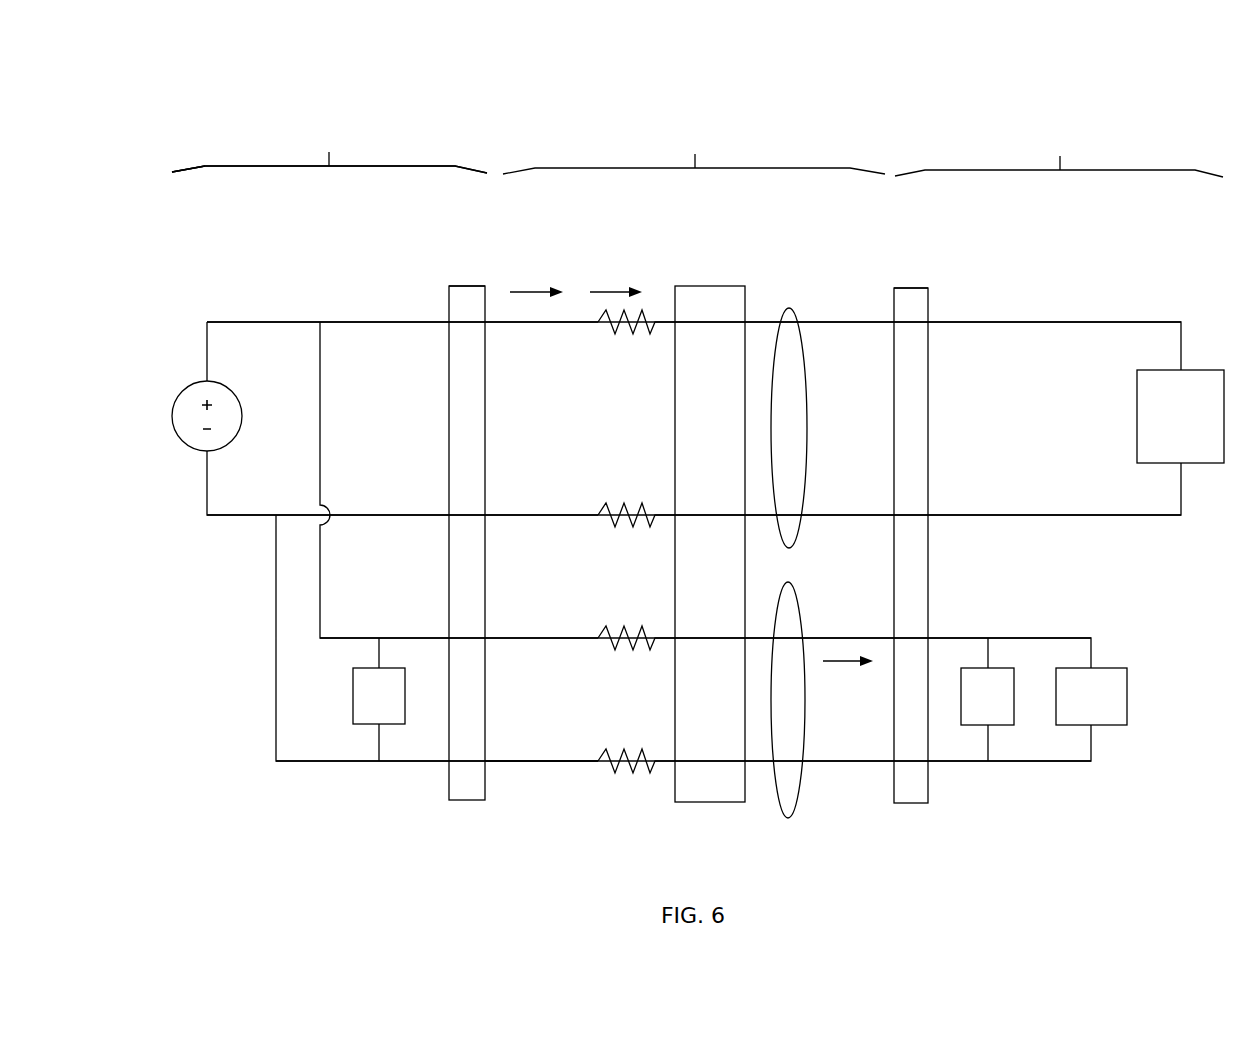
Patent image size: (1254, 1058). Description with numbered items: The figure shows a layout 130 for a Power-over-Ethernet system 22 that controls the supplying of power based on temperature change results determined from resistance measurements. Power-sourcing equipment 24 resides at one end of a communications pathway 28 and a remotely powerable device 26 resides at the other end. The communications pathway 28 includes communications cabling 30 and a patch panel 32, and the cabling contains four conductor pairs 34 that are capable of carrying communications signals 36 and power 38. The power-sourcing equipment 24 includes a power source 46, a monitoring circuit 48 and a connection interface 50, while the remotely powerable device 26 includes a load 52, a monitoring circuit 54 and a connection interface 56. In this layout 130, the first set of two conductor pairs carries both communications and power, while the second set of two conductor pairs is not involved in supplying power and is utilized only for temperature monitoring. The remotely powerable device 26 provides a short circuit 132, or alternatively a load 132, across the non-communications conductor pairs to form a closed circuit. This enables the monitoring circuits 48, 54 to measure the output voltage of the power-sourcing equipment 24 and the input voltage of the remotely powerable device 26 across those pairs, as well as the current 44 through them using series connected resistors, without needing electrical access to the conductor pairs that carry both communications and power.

The layout 130 is at (181, 88).
The Power-over-Ethernet system 22 is at (258, 130).
The power-sourcing equipment 24 is at (329, 148).
The communications pathway 28 is at (694, 150).
The remotely powerable device 26 is at (1059, 151).
The communications cabling 30 is at (514, 806).
The patch panel 32 is at (700, 803).
The conductor pairs 34 is at (558, 782).
The communications signal 36 is at (530, 290).
The power 38 is at (607, 290).
The current 44 is at (840, 663).
The power source 46 is at (190, 450).
The monitoring circuit 48 is at (379, 699).
The connection interface 50 is at (460, 801).
The load 52 is at (1180, 416).
The monitoring circuit 54 is at (987, 699).
The connection interface 56 is at (920, 806).
The short circuit 132 is at (1091, 696).